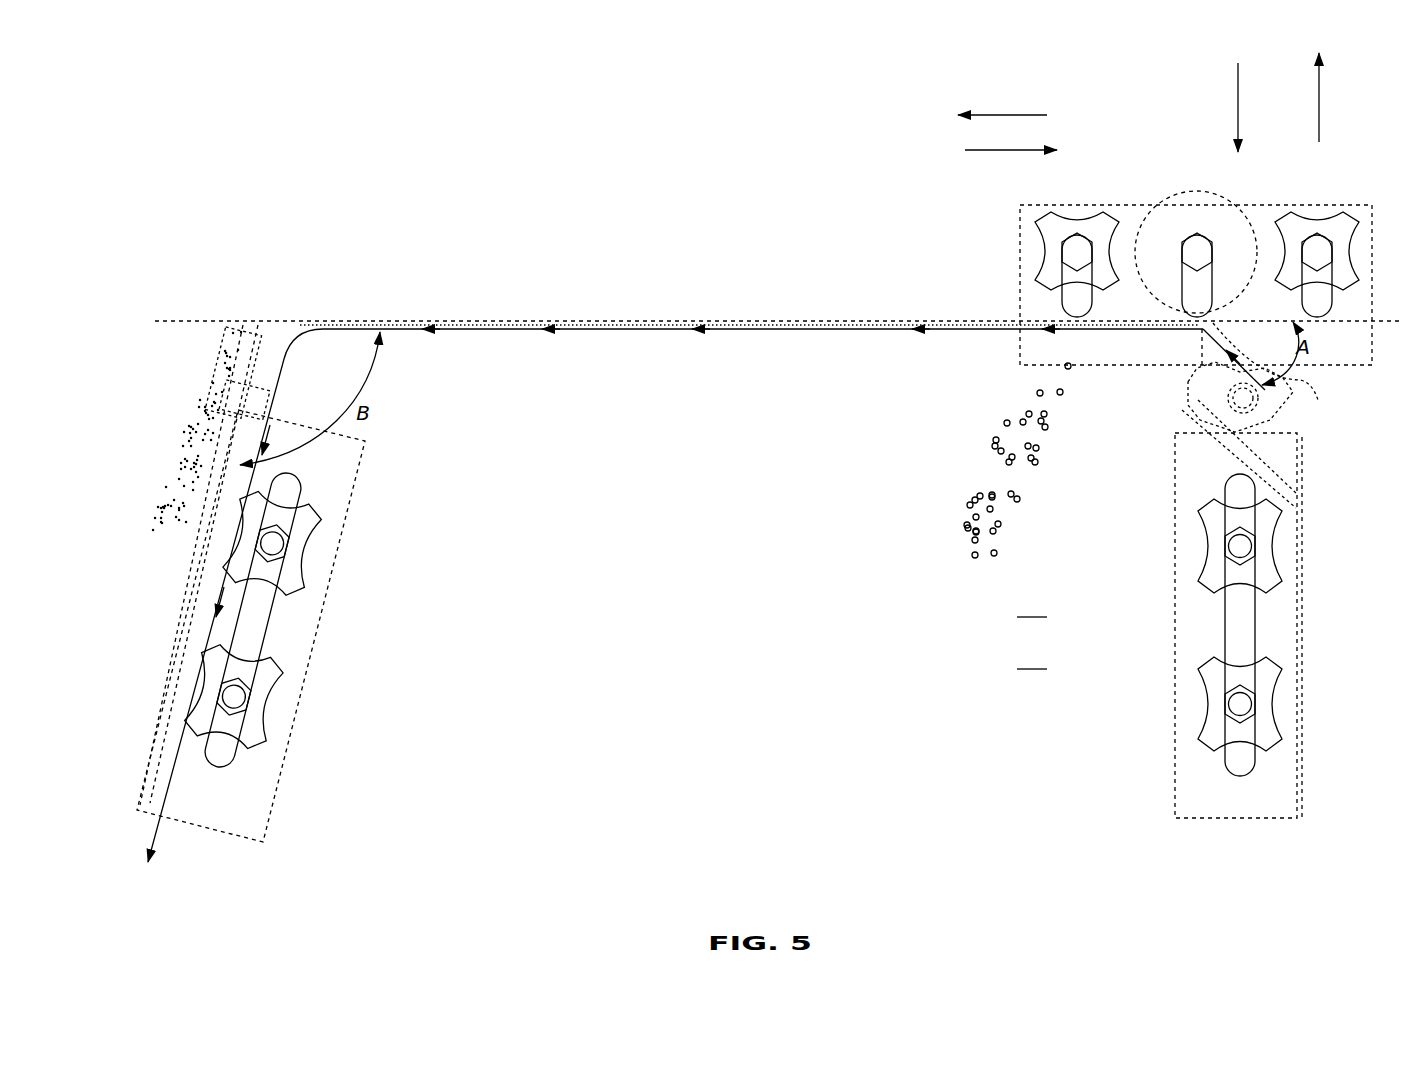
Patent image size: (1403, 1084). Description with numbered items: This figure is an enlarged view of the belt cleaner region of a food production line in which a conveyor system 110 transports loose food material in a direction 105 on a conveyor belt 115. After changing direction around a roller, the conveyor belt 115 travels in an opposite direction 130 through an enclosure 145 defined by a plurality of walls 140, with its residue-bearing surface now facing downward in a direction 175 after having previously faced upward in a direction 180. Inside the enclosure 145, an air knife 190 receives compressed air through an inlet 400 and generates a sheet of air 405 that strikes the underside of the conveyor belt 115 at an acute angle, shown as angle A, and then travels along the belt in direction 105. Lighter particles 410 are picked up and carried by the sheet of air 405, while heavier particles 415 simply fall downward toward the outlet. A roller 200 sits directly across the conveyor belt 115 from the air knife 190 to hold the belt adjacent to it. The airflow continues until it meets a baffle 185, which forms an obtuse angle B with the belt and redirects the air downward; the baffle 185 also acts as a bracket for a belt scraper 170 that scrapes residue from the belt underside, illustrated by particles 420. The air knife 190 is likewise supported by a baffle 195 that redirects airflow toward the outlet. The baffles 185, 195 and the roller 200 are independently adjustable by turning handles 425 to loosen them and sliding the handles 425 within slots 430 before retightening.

The direction 105 is at (1005, 115).
The direction 130 is at (980, 148).
The direction 175 is at (1238, 90).
The direction 180 is at (1318, 118).
The conveyor system 110 is at (293, 318).
The conveyor belt 115 is at (370, 322).
The lighter particles 410 is at (773, 322).
The sheet of air 405 is at (652, 331).
The baffle 185 is at (195, 567).
The belt scraper 170 is at (225, 337).
The particles 420 is at (195, 426).
The slots 430 is at (267, 627).
The handles 425 is at (297, 558).
The roller 200 is at (1170, 192).
The inlet 400 is at (1180, 405).
The air knife 190 is at (1312, 405).
The heavier particles 415 is at (983, 476).
The walls 140 is at (1032, 606).
The enclosure 145 is at (1032, 658).
The baffle 195 is at (1307, 760).